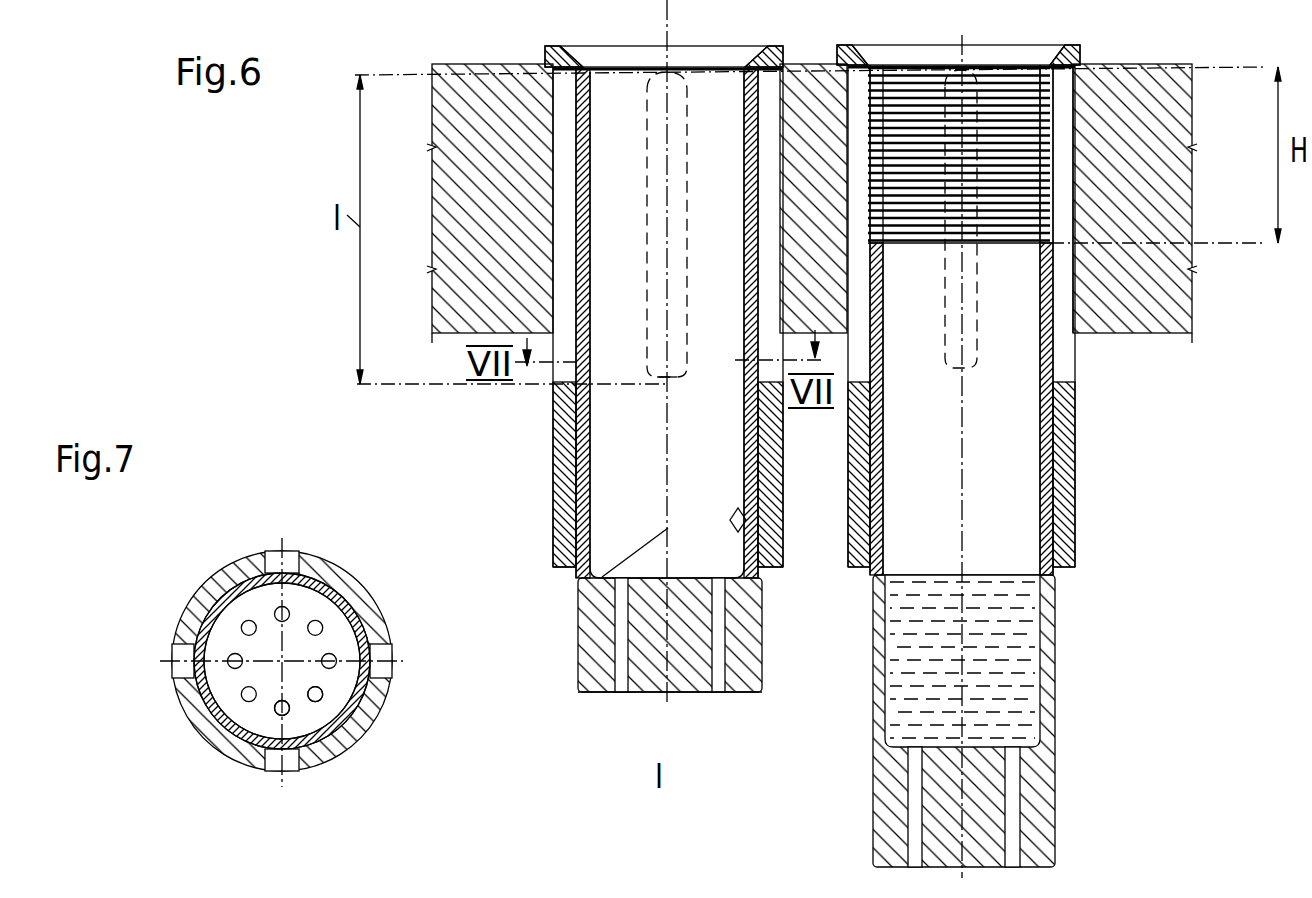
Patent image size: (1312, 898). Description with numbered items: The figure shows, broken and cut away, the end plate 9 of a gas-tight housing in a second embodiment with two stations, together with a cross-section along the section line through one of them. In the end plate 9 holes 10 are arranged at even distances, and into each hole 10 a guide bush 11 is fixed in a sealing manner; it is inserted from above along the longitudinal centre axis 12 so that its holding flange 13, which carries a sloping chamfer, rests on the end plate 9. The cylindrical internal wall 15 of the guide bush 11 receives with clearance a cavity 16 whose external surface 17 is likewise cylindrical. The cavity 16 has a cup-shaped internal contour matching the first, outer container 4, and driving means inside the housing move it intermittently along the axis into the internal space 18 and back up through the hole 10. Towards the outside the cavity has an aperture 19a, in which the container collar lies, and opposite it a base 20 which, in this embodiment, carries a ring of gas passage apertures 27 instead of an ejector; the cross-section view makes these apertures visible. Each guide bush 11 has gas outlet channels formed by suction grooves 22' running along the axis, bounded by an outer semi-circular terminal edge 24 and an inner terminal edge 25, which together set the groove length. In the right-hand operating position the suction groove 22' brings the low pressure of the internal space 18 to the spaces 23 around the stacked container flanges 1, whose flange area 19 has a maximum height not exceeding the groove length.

In FIG. 6, the flange 1 is at (1008, 72).
In FIG. 6, the outer container 4 is at (778, 565).
In FIG. 6, the end plate 9 is at (1172, 317).
In FIG. 6, the hole 10 is at (1077, 93).
In FIG. 6, the guide bush 11 is at (1060, 503).
In FIG. 7, the guide bush 11 is at (317, 570).
In FIG. 6, the longitudinal centre axis 12 is at (610, 580).
In FIG. 7, the longitudinal centre axis 12 is at (282, 660).
In FIG. 6, the holding flange 13 is at (545, 57).
In FIG. 6, the internal wall 15 is at (1047, 458).
In FIG. 7, the internal wall 15 is at (200, 618).
In FIG. 6, the cavity 16 is at (750, 595).
In FIG. 7, the cavity 16 is at (358, 618).
In FIG. 6, the external surface 17 is at (760, 80).
In FIG. 6, the internal space 18 is at (790, 765).
In FIG. 6, the flange area 19 is at (898, 118).
In FIG. 6, the aperture 19a is at (583, 70).
In FIG. 6, the base 20 is at (1000, 750).
In FIG. 7, the base 20 is at (255, 598).
In FIG. 6, the suction groove 22' is at (1052, 456).
In FIG. 6, the space 23 is at (1042, 243).
In FIG. 6, the terminal edge 24 is at (673, 72).
In FIG. 6, the terminal edge 25 is at (668, 382).
In FIG. 6, the gas passage apertures 27 is at (620, 660).
In FIG. 7, the gas passage apertures 27 is at (322, 700).